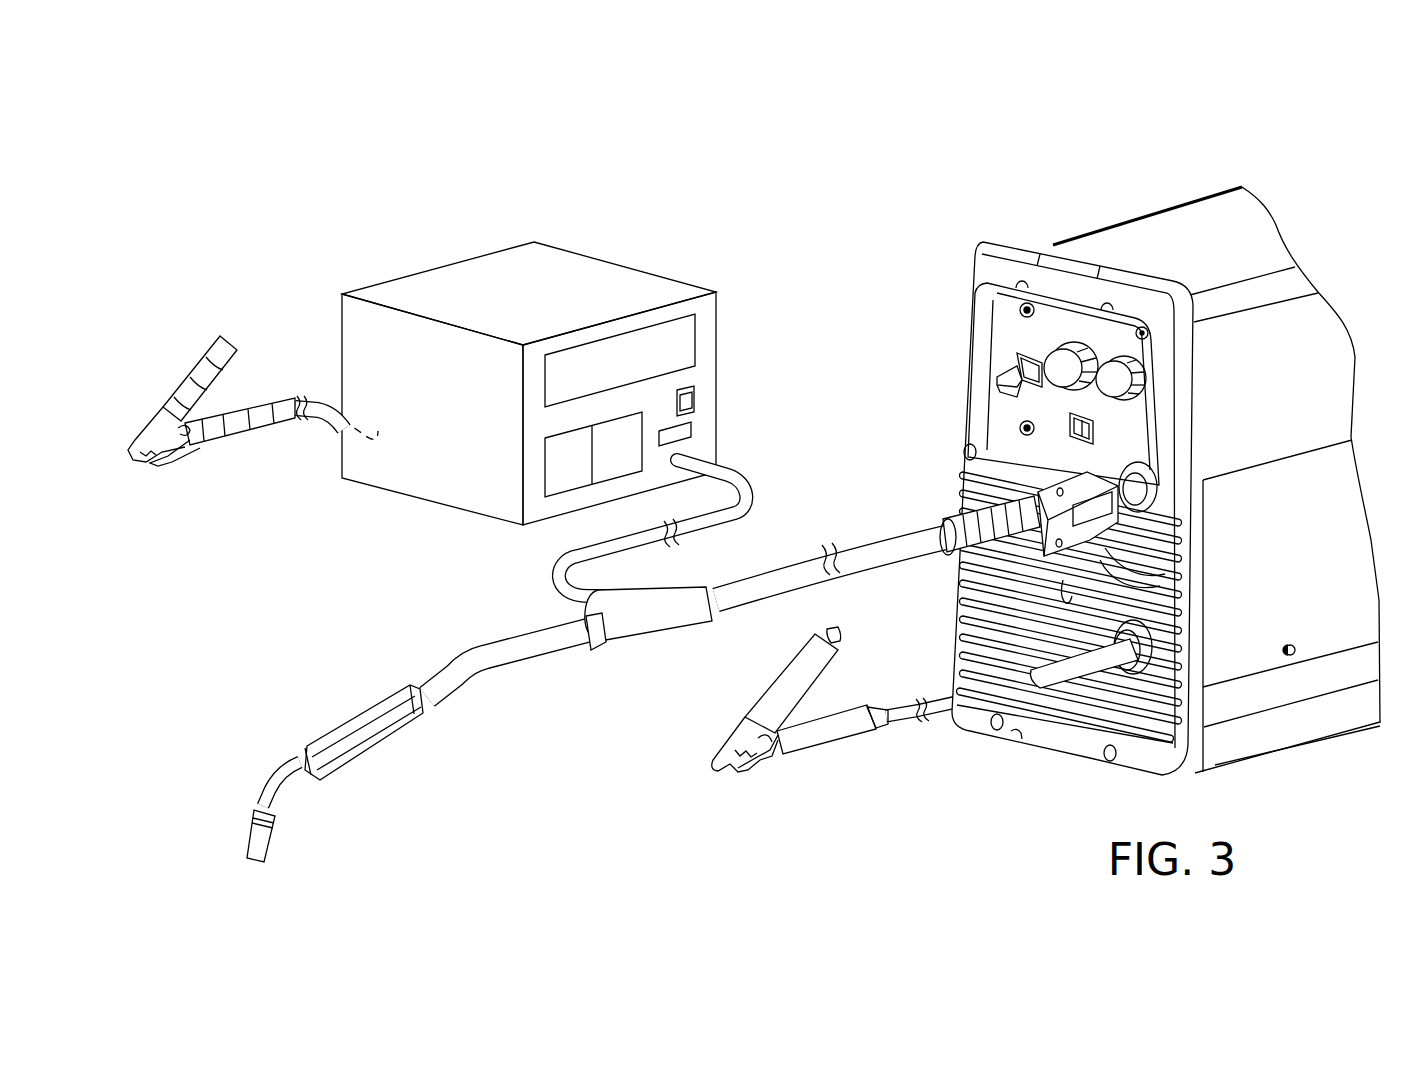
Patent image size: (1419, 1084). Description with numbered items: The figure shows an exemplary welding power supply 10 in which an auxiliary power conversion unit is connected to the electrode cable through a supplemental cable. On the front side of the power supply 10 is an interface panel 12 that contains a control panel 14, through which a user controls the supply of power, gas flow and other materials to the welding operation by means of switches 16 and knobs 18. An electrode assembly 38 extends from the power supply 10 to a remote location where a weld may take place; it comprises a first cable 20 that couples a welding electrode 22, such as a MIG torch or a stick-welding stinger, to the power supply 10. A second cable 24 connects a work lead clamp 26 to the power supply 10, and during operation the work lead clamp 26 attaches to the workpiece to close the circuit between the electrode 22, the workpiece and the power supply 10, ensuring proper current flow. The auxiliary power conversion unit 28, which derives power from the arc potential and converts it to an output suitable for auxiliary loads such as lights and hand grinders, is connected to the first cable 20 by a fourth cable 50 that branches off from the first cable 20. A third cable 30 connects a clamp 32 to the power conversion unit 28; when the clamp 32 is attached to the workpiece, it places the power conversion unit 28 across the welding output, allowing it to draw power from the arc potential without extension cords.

The welding power supply 10 is at (1143, 457).
The interface panel 12 is at (1077, 481).
The control panel 14 is at (1077, 396).
The switches 16 is at (1080, 430).
The knobs 18 is at (1063, 392).
The first cable 20 is at (838, 556).
The welding electrode 22 is at (356, 717).
The second cable 24 is at (919, 722).
The work lead clamp 26 is at (828, 750).
The auxiliary power conversion unit 28 is at (622, 268).
The third cable 30 is at (286, 402).
The clamp 32 is at (194, 368).
The electrode assembly 38 is at (776, 511).
The fourth cable 50 is at (655, 545).